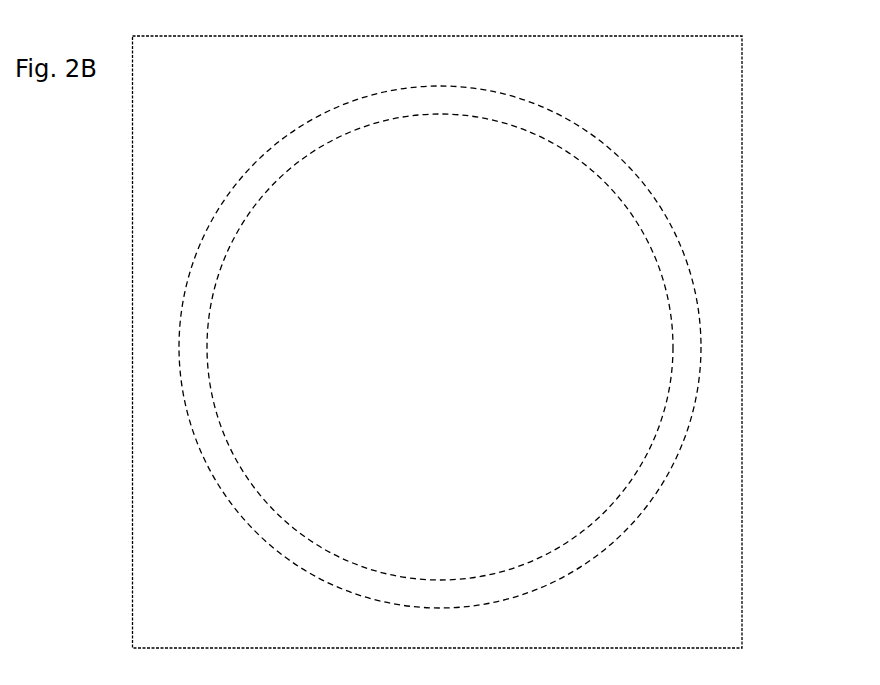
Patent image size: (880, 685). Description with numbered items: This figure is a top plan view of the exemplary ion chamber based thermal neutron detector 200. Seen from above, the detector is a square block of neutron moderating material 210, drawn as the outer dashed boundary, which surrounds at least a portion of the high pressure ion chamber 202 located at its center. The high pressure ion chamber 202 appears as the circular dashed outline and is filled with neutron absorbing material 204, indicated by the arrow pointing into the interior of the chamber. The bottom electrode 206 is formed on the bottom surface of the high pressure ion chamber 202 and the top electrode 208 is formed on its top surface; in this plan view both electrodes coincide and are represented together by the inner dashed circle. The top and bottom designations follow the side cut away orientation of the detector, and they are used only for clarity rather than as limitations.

The ion chamber based thermal neutron detector 200 is at (810, 79).
The high pressure ion chamber 202 is at (232, 507).
The neutron absorbing material 204 is at (535, 417).
The bottom electrode 206 is at (670, 302).
The top electrode 208 is at (520, 347).
The neutron moderating material 210 is at (132, 214).